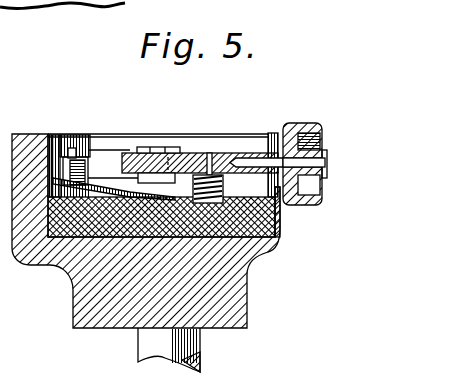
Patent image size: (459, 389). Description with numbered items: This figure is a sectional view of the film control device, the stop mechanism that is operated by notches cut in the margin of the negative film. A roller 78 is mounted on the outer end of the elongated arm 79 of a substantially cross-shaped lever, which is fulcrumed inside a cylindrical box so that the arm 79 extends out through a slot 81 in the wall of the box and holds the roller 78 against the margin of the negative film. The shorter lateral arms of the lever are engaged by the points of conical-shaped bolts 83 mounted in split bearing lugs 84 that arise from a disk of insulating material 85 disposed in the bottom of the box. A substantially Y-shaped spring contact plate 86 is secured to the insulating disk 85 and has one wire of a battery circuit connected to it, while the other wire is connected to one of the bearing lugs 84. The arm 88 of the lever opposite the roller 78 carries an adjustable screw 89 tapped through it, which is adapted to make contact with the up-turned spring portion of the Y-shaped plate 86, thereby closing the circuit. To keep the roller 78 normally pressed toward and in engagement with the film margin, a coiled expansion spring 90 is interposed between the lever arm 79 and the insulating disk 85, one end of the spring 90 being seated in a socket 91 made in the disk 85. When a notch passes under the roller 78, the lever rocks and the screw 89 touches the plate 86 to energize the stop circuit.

The roller 78 is at (312, 206).
The elongated arm 79 is at (193, 152).
The slot 81 is at (258, 140).
The conical-shaped bolt 83 is at (168, 157).
The split bearing lug 84 is at (148, 147).
The insulating disk 85 is at (60, 245).
The Y-shaped spring contact plate 86 is at (112, 157).
The lever arm 88 is at (87, 131).
The adjustable screw 89 is at (60, 134).
The coiled expansion spring 90 is at (230, 240).
The socket 91 is at (280, 233).